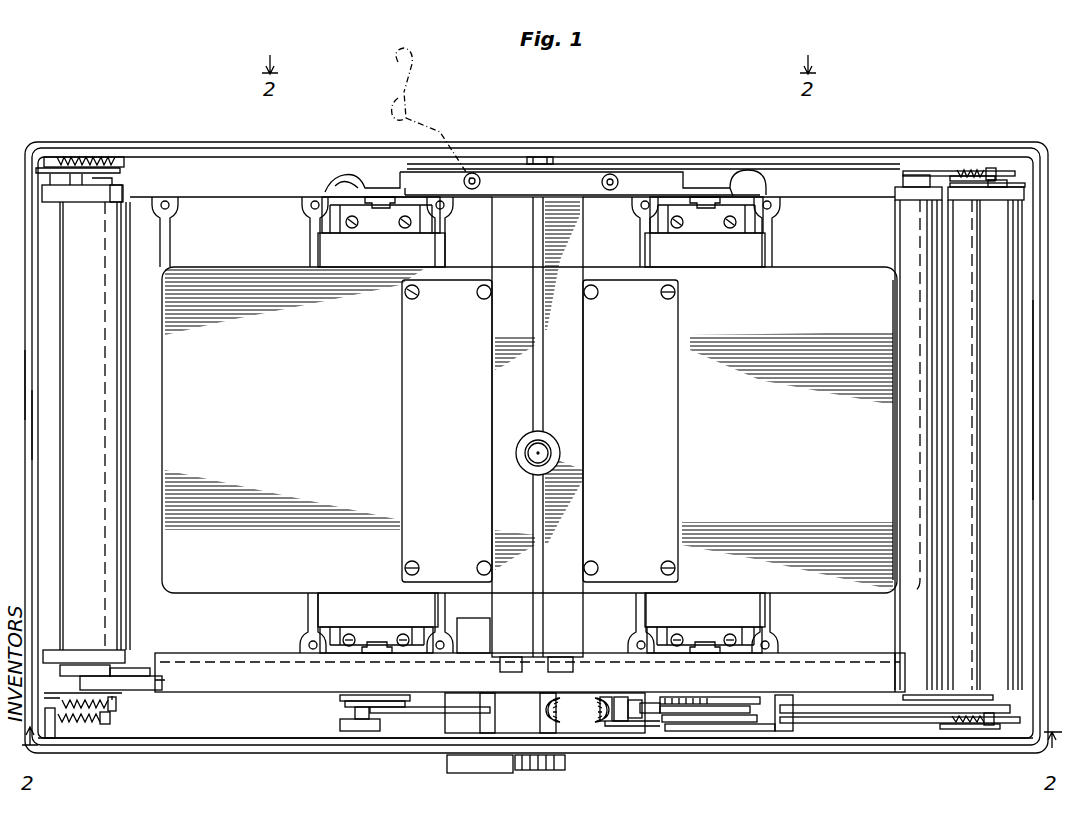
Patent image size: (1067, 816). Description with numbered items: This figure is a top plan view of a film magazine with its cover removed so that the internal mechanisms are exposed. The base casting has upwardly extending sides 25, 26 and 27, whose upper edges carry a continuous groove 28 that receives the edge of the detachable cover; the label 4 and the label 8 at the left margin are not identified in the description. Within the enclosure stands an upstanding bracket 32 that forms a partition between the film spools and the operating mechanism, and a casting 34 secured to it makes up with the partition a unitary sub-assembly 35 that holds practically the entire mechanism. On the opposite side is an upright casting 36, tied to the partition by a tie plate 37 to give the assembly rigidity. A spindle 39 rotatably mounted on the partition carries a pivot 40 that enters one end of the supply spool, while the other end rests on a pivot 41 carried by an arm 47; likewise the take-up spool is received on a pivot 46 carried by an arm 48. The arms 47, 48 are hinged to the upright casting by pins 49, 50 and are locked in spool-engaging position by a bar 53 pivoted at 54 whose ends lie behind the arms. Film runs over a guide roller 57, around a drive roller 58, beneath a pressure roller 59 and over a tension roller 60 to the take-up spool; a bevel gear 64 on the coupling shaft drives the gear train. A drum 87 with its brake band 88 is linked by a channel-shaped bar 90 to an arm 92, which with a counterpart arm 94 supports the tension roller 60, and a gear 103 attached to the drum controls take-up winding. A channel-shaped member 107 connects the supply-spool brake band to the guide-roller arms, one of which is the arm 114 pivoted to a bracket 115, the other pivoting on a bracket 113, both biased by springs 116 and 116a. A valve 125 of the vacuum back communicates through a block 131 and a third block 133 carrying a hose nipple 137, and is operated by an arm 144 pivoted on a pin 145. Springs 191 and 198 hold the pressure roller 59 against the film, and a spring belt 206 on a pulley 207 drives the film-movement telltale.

The frame side 4 is at (25, 385).
The frame side wall 8 is at (33, 426).
The side 25 is at (1052, 400).
The side 26 is at (238, 753).
The side 27 is at (826, 142).
The groove 28 is at (867, 148).
The bracket 32 is at (598, 654).
The casting 34 is at (622, 734).
The sub-assembly 35 is at (656, 713).
The upright casting 36 is at (576, 172).
The tie plate 37 is at (574, 360).
The spindle 39 is at (378, 713).
The pivot 40 is at (374, 640).
The pivot 41 is at (376, 215).
The pivot 46 is at (702, 215).
The arm 47 is at (420, 76).
The arm 48 is at (700, 165).
The pin 49 is at (477, 176).
The pin 50 is at (614, 176).
The bar 53 is at (516, 166).
The pivot 54 is at (546, 157).
The guide roller 57 is at (132, 510).
The drive roller 58 is at (956, 455).
The pressure roller 59 is at (976, 480).
The tension roller 60 is at (896, 440).
The bevel gear 64 is at (562, 714).
The drum 87 is at (717, 731).
The brake band 88 is at (688, 722).
The channel-shaped bar 90 is at (840, 717).
The arm 92 is at (903, 697).
The arm 94 is at (904, 172).
The gear 103 is at (714, 698).
The channel-shaped member 107 is at (138, 694).
The bracket 113 is at (63, 660).
The arm 114 is at (124, 193).
The bracket 115 is at (80, 202).
The spring 116 is at (95, 725).
The spring 116a is at (82, 158).
The valve 125 is at (432, 726).
The block 131 is at (477, 635).
The third block 133 is at (447, 767).
The hose nipple 137 is at (548, 770).
The arm 144 is at (632, 690).
The pin 145 is at (606, 697).
The spring 191 is at (970, 726).
The spring 198 is at (975, 168).
The spring belt 206 is at (364, 696).
The pulley 207 is at (344, 704).